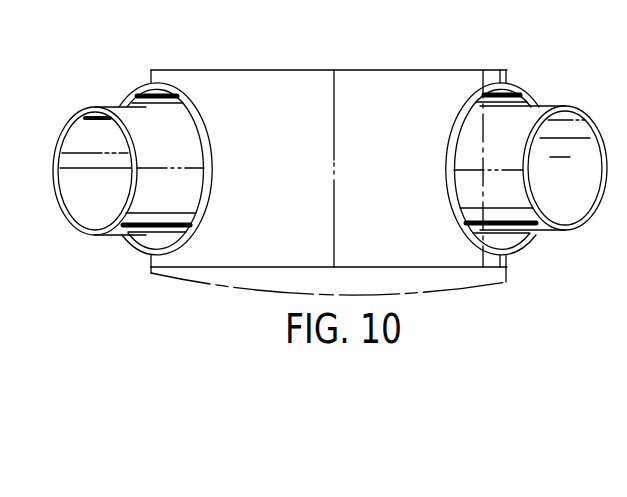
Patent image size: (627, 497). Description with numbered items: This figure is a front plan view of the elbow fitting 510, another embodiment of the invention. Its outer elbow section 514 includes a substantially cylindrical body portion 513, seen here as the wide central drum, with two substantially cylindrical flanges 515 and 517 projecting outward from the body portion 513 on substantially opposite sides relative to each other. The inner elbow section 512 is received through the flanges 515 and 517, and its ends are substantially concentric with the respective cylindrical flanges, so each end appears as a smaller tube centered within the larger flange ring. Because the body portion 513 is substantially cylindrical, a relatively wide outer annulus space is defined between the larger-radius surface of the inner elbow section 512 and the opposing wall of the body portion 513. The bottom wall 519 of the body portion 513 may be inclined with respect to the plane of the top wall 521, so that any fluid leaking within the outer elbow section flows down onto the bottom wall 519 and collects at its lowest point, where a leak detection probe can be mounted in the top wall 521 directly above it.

The elbow fitting 510 is at (458, 58).
The inner elbow section 512 is at (137, 234).
The body portion 513 is at (300, 93).
The outer elbow section 514 is at (238, 70).
The cylindrical flange 515 is at (146, 82).
The cylindrical flange 517 is at (527, 88).
The bottom wall 519 is at (453, 290).
The top wall 521 is at (406, 70).